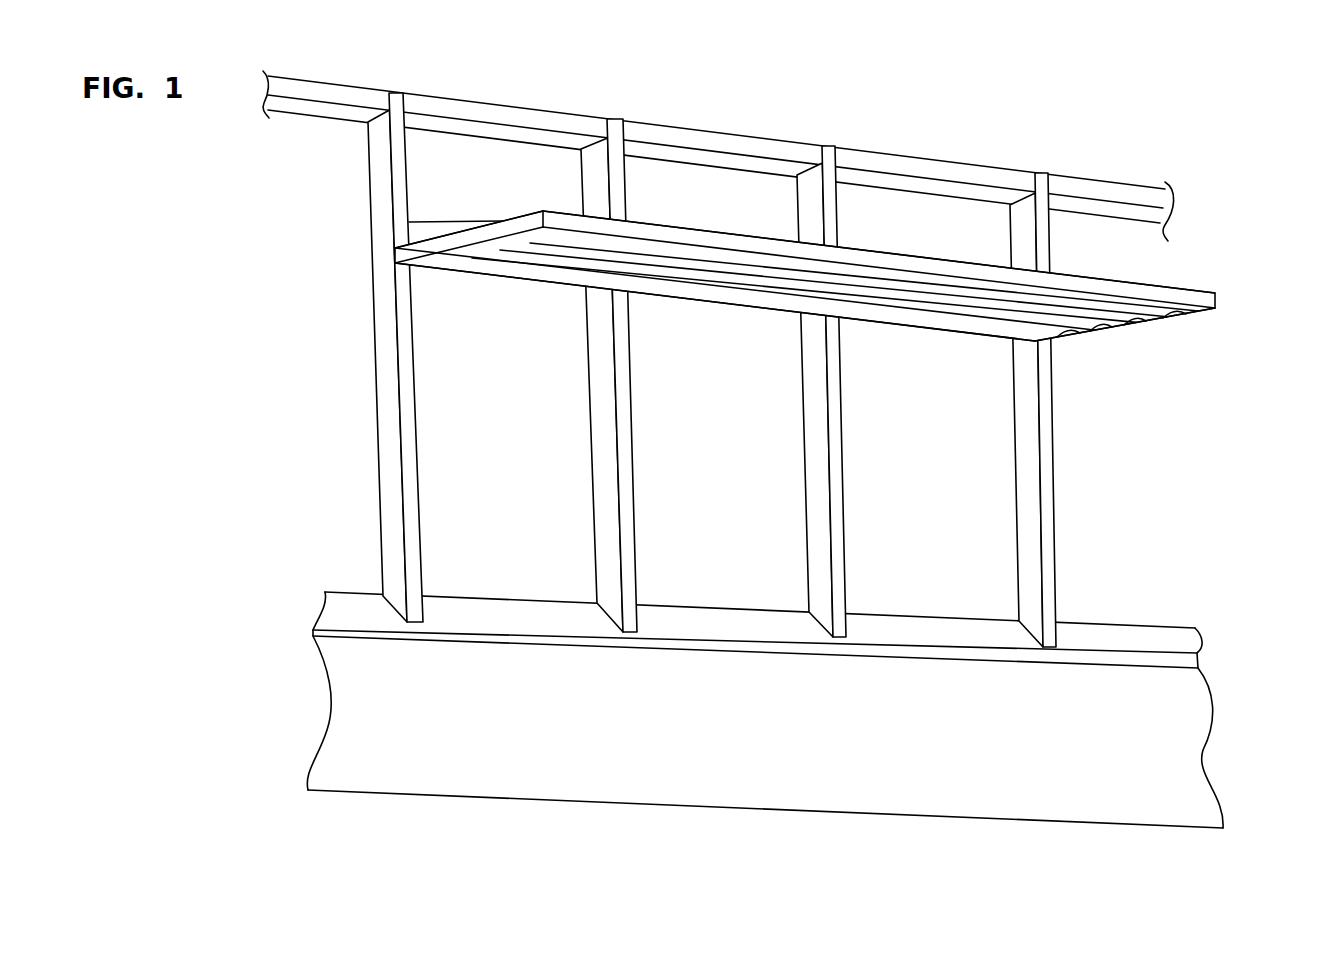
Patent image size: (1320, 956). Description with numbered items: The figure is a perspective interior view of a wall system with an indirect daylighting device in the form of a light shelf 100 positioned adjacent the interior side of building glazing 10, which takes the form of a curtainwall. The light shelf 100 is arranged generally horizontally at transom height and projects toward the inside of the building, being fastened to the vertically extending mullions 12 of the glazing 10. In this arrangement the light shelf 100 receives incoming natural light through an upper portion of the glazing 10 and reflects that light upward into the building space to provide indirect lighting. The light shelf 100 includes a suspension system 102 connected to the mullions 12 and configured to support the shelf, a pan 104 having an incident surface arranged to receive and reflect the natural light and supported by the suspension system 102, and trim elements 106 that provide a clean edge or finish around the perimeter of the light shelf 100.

The glazing 10 is at (743, 449).
The mullions 12 is at (632, 380).
The light shelf 100 is at (802, 225).
The suspension system 102 is at (436, 225).
The pan 104 is at (580, 272).
The trim elements 106 is at (743, 242).